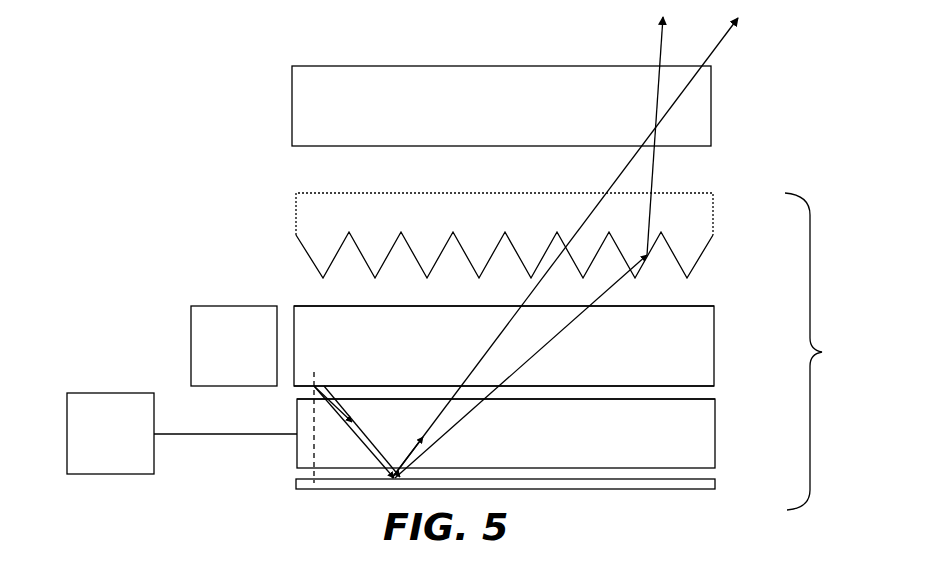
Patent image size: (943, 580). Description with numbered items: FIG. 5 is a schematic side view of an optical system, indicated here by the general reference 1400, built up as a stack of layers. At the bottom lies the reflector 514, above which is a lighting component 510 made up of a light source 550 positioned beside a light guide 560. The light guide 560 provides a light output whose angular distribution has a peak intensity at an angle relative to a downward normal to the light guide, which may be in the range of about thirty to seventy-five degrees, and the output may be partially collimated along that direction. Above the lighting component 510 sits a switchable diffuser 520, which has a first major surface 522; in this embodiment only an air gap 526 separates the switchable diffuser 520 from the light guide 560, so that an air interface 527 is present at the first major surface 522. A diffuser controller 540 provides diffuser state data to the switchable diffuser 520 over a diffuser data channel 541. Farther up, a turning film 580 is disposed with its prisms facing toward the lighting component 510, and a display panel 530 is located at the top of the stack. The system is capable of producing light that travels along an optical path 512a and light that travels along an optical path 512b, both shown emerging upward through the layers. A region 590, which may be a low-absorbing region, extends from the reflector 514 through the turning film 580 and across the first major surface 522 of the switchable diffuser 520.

The display system 1400 is at (188, 98).
The lighting component 510 is at (316, 316).
The optical path 512a is at (660, 33).
The optical path 512b is at (717, 50).
The reflector 514 is at (705, 484).
The switchable diffuser 520 is at (702, 447).
The first major surface 522 is at (675, 403).
The air gap 526 is at (622, 395).
The air interface 527 is at (712, 400).
The display panel 530 is at (697, 113).
The diffuser controller 540 is at (113, 418).
The diffuser data channel 541 is at (221, 436).
The light source 550 is at (220, 338).
The light guide 560 is at (702, 347).
The turning film 580 is at (702, 220).
The region 590 is at (829, 351).